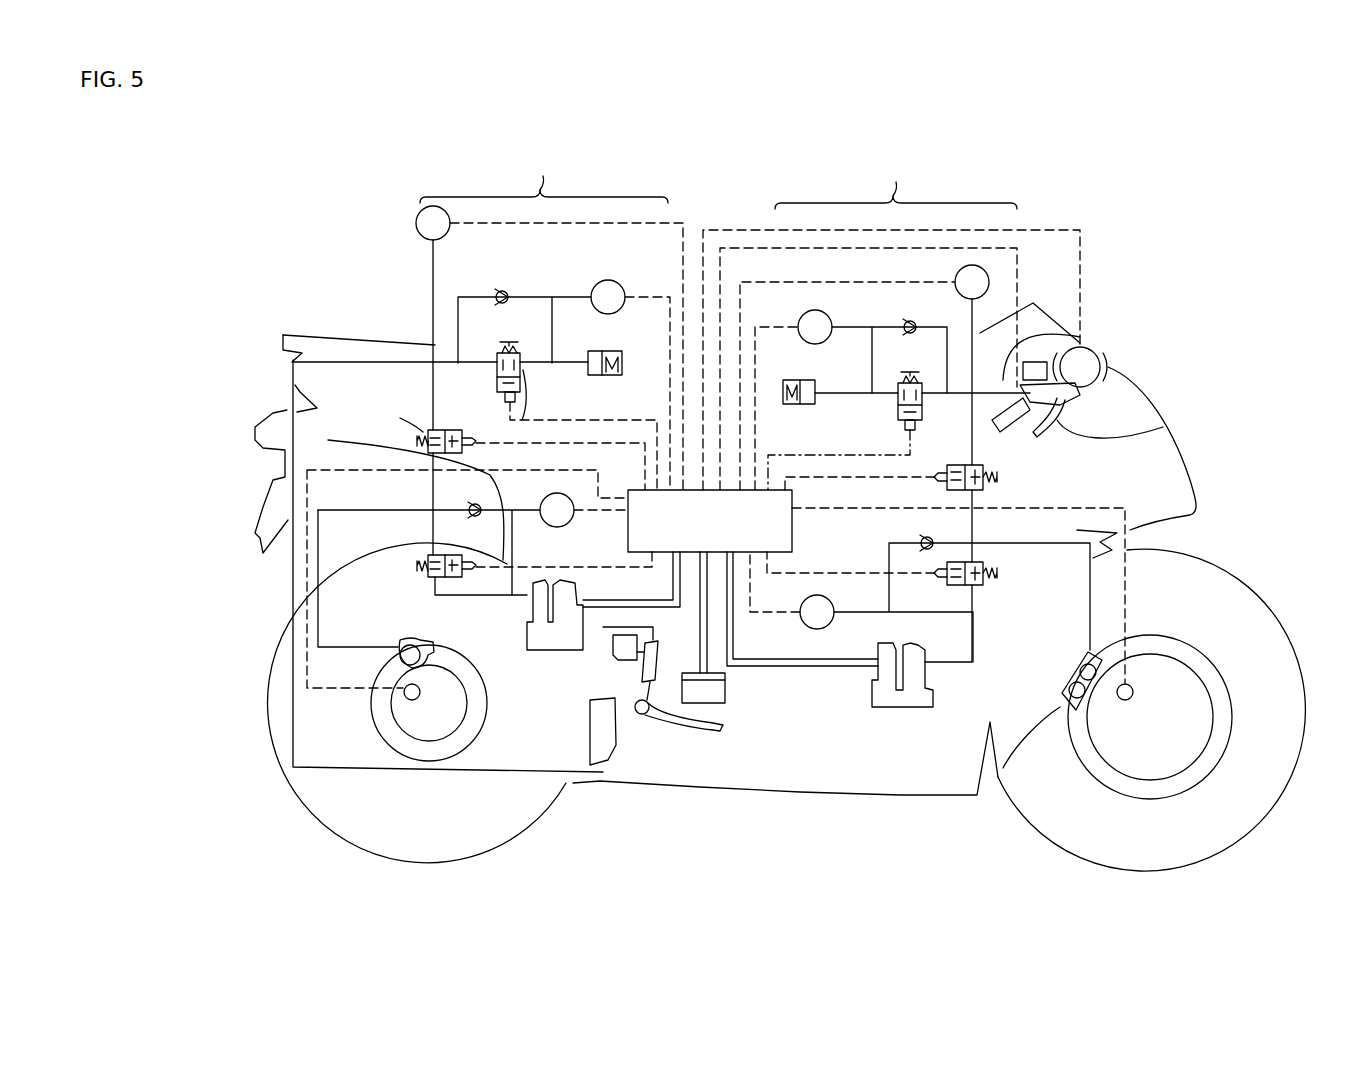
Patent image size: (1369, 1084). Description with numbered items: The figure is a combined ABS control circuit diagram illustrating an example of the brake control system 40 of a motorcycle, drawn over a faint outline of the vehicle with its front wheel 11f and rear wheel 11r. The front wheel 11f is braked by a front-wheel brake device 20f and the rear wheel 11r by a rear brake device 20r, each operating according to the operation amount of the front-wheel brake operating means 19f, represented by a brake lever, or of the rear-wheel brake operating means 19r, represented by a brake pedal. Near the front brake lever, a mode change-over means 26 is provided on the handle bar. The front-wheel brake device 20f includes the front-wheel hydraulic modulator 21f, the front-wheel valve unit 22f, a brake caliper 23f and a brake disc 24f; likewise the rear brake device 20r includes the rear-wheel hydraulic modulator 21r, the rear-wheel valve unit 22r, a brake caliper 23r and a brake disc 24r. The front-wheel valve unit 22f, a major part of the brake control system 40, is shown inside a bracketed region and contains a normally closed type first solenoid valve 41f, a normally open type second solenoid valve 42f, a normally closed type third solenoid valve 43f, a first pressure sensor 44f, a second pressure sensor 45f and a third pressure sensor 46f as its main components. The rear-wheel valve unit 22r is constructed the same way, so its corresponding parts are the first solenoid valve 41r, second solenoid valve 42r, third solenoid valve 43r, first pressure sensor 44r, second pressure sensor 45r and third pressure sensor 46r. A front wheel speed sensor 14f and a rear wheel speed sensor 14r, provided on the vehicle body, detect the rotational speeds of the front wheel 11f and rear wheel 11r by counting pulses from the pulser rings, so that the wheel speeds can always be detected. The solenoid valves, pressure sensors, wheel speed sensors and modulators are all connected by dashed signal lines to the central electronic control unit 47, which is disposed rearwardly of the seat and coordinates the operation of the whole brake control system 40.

The rear wheel 11r is at (267, 700).
The front wheel 11f is at (1280, 625).
The rear wheel speed sensor 14r is at (417, 697).
The front wheel speed sensor 14f is at (1130, 697).
The rear-wheel brake operating means 19r is at (687, 732).
The front-wheel brake operating means 19f is at (1165, 425).
The rear brake device 20r is at (387, 724).
The front-wheel brake device 20f is at (1068, 710).
The rear-wheel hydraulic modulator 21r is at (550, 650).
The front-wheel hydraulic modulator 21f is at (905, 712).
The rear-wheel valve unit 22r is at (488, 419).
The front-wheel valve unit 22f is at (896, 407).
The brake caliper 23r is at (422, 640).
The brake caliper 23f is at (1063, 707).
The brake disc 24r is at (387, 732).
The brake disc 24f is at (1113, 793).
The mode change-over means 26 is at (1083, 347).
The brake control system 40 is at (783, 720).
The first solenoid valve 41r is at (522, 375).
The first solenoid valve 41f is at (898, 410).
The second solenoid valve 42r is at (425, 432).
The second solenoid valve 42f is at (983, 462).
The third solenoid valve 43r is at (427, 577).
The third solenoid valve 43f is at (980, 587).
The first pressure sensor 44r is at (415, 223).
The first pressure sensor 44f is at (955, 280).
The second pressure sensor 45r is at (608, 280).
The second pressure sensor 45f is at (830, 318).
The third pressure sensor 46r is at (568, 525).
The third pressure sensor 46f is at (815, 627).
The electronic control unit 47 is at (792, 530).